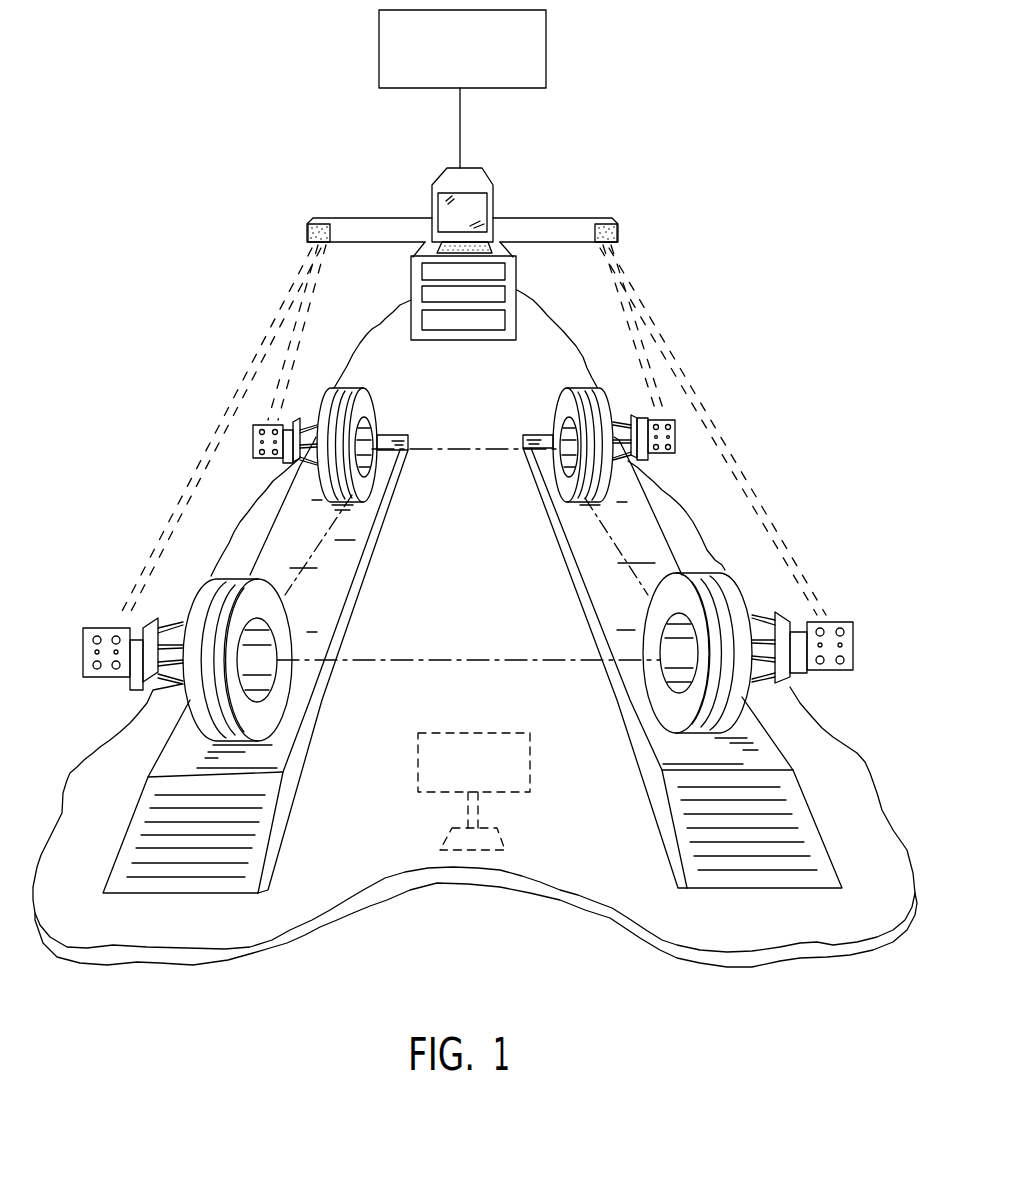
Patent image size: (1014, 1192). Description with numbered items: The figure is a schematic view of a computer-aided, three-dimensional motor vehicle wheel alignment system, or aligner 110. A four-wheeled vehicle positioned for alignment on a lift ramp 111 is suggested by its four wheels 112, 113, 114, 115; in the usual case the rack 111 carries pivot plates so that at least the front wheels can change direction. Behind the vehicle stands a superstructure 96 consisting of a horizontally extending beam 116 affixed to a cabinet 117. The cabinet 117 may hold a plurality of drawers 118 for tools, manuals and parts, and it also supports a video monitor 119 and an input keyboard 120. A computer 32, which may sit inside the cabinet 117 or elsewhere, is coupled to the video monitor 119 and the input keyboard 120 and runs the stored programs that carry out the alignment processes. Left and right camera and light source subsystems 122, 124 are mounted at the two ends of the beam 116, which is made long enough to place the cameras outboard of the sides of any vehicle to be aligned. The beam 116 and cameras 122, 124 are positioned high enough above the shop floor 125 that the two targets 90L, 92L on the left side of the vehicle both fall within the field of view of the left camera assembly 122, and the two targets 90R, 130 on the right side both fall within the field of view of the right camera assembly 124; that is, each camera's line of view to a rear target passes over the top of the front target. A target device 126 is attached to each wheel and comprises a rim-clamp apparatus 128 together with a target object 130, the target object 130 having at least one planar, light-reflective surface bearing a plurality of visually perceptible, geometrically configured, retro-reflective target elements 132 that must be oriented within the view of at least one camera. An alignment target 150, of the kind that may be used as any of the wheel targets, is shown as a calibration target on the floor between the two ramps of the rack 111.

The computer 32 is at (456, 44).
The aligner 110 is at (580, 170).
The superstructure 96 is at (333, 198).
The left camera/light source subsystem 122 is at (308, 230).
The right camera/light source subsystem 124 is at (619, 226).
The beam 116 is at (402, 217).
The video monitor 119 is at (494, 195).
The input keyboard 120 is at (496, 240).
The cabinet 117 is at (410, 285).
The drawers 118 is at (502, 316).
The shop floor 125 is at (366, 350).
The lift ramp 111 is at (530, 587).
The wheel 112 is at (370, 484).
The wheel 113 is at (538, 499).
The wheel 114 is at (278, 710).
The wheel 115 is at (650, 703).
The left rear target 90L is at (253, 443).
The right rear target 90R is at (677, 430).
The left front target 92L is at (100, 628).
The target object 130 is at (833, 622).
The retro-reflective target elements 132 is at (840, 655).
The rim-clamp apparatus 128 is at (778, 610).
The target device 126 is at (826, 680).
The alignment target 150 is at (530, 772).